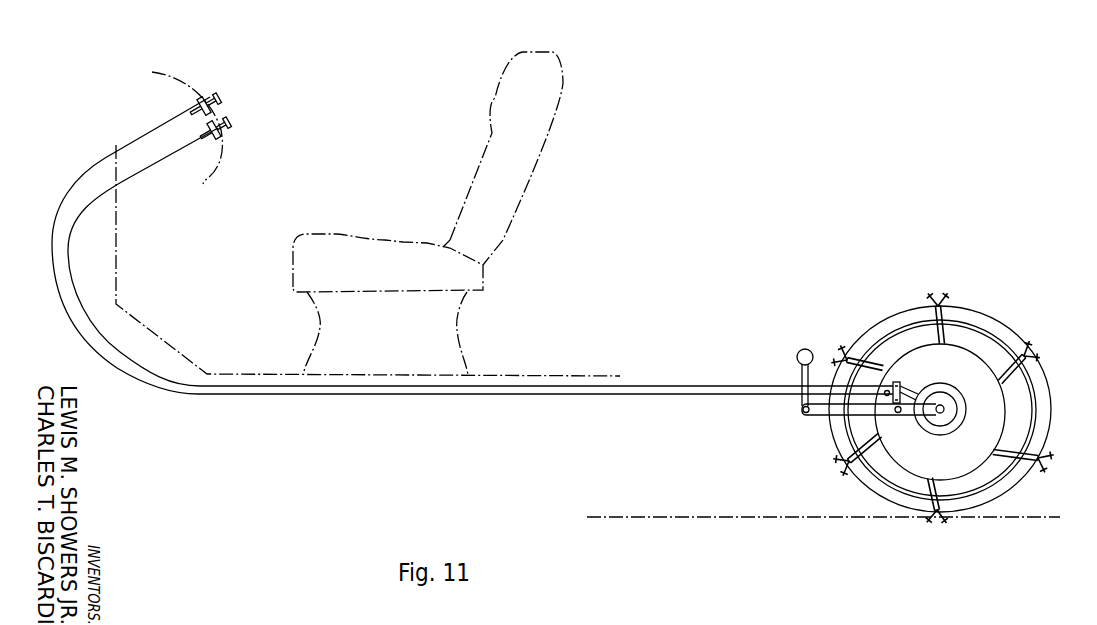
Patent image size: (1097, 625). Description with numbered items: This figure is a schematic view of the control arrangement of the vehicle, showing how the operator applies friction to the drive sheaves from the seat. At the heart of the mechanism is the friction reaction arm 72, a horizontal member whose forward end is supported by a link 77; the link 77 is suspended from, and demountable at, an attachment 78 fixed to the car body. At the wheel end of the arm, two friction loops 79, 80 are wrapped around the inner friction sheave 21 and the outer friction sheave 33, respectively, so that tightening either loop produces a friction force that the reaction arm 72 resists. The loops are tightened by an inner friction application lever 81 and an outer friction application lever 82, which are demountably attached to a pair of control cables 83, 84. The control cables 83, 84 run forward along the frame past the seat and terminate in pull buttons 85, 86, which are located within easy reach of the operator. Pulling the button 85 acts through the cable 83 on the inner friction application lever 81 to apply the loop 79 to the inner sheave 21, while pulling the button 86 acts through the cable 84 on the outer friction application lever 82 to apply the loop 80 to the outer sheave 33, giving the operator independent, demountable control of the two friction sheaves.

The inner friction sheave 21 is at (958, 420).
The outer friction sheave 33 is at (966, 488).
The friction reaction arm 72 is at (800, 412).
The link 77 is at (800, 374).
The demountable suspension attachment 78 is at (802, 351).
The friction loop 79 is at (907, 387).
The friction loop 80 is at (893, 223).
The inner friction application lever 81 is at (886, 394).
The outer friction application lever 82 is at (888, 389).
The control cable 83 is at (432, 395).
The control cable 84 is at (507, 387).
The pull button 85 is at (210, 97).
The pull button 86 is at (218, 128).